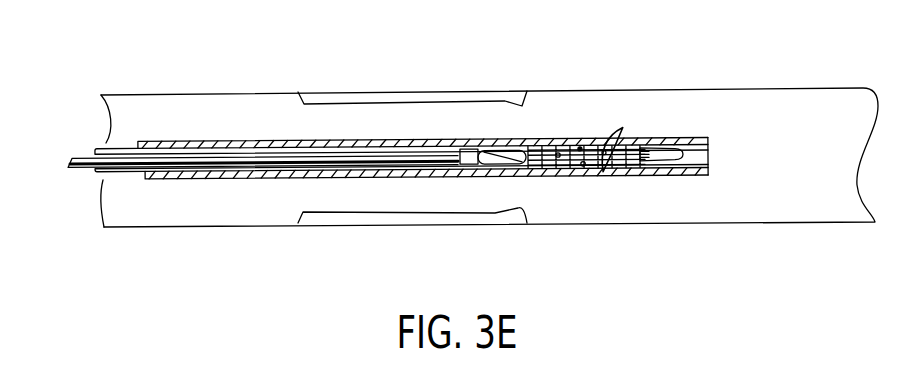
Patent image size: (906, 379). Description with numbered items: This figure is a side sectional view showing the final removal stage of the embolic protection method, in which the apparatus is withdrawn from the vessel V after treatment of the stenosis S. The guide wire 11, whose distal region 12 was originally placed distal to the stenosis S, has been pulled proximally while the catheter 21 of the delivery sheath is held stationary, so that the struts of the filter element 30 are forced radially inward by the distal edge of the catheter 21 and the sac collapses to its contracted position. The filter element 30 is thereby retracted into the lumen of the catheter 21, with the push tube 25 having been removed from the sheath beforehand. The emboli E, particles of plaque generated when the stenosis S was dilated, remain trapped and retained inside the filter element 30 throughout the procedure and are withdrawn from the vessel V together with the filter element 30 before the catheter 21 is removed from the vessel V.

The vessel V is at (207, 93).
The stenosis S is at (421, 100).
The catheter 21 is at (210, 141).
The push tube 25 is at (204, 179).
The guide wire 11 is at (84, 169).
The distal region 12 is at (524, 149).
The filter element 30 is at (624, 168).
The emboli E is at (625, 129).